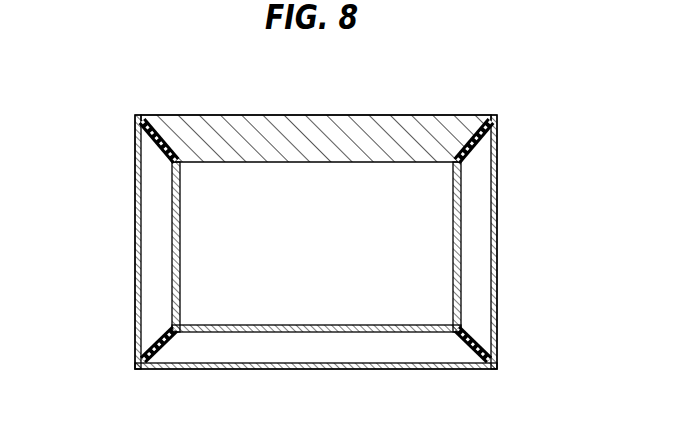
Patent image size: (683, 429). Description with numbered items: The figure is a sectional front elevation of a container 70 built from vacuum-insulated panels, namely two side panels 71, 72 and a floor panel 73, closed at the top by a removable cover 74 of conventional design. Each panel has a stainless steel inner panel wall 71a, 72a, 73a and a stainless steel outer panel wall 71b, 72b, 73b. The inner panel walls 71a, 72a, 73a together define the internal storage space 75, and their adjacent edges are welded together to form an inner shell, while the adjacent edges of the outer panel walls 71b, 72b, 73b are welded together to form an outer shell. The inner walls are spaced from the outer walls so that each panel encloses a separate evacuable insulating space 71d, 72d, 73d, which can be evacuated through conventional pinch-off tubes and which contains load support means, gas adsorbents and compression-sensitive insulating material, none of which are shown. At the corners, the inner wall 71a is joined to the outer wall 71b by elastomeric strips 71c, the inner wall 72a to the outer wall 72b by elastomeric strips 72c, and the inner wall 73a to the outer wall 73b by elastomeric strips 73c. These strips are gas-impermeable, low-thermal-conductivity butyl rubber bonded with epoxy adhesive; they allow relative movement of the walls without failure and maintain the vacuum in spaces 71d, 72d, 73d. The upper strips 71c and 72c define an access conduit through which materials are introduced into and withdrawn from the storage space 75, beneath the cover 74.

The container 70 is at (240, 115).
The removable cover 74 is at (315, 124).
The internal storage space 75 is at (324, 232).
The side panel 71 is at (106, 242).
The inner panel wall 71a is at (173, 312).
The outer panel wall 71b is at (135, 347).
The elastomeric strips 71c is at (160, 146).
The evacuable insulating space 71d is at (158, 213).
The side panel 72 is at (510, 242).
The inner panel wall 72a is at (459, 255).
The outer panel wall 72b is at (497, 288).
The elastomeric strips 72c is at (477, 142).
The evacuable insulating space 72d is at (478, 181).
The floor panel 73 is at (316, 367).
The inner panel wall 73a is at (365, 333).
The outer panel wall 73b is at (432, 369).
The elastomeric strips 73c is at (158, 347).
The evacuable insulating space 73d is at (250, 346).